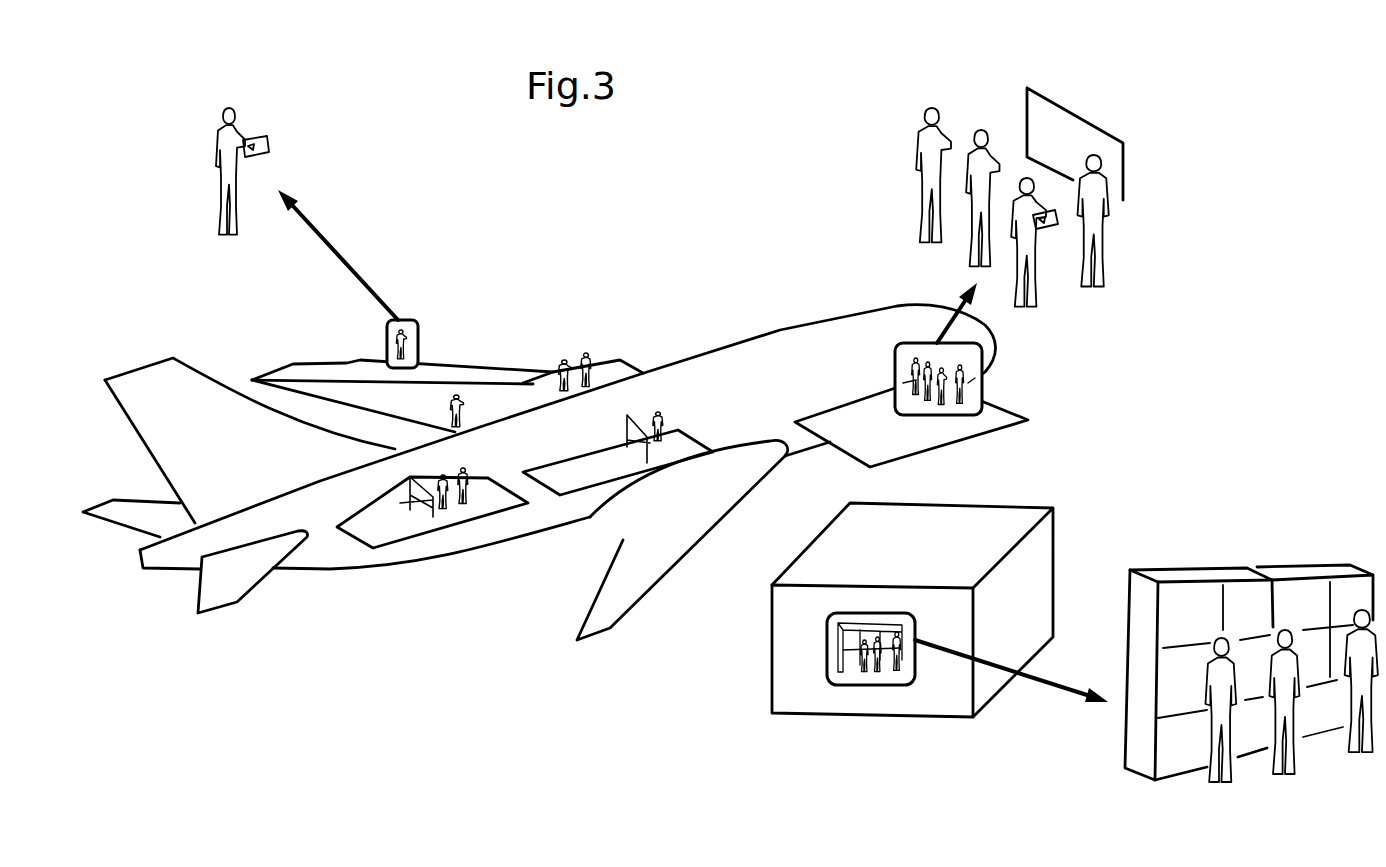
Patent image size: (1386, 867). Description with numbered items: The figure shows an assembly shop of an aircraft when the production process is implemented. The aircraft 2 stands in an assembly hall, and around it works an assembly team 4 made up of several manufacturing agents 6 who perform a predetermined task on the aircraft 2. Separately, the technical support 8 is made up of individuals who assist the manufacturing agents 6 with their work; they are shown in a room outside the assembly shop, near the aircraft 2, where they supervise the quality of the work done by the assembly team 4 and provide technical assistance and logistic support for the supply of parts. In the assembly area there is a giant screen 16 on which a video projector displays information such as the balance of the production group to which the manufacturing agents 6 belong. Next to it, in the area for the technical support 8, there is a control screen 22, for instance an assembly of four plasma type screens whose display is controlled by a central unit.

The aircraft 2 is at (737, 363).
The assembly team 4 is at (923, 150).
The manufacturing agent 6 is at (218, 145).
The technical support 8 is at (943, 703).
The giant screen 16 is at (1082, 127).
The control screen 22 is at (1192, 592).